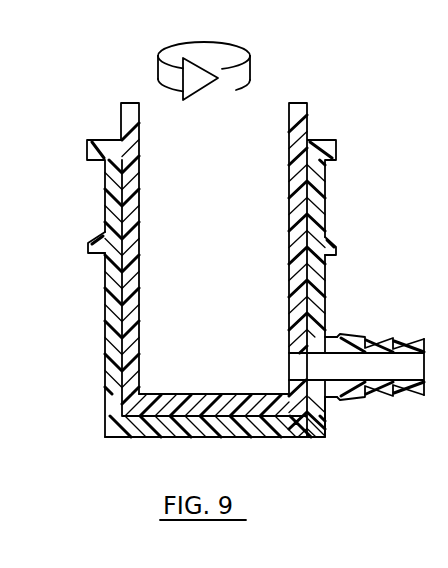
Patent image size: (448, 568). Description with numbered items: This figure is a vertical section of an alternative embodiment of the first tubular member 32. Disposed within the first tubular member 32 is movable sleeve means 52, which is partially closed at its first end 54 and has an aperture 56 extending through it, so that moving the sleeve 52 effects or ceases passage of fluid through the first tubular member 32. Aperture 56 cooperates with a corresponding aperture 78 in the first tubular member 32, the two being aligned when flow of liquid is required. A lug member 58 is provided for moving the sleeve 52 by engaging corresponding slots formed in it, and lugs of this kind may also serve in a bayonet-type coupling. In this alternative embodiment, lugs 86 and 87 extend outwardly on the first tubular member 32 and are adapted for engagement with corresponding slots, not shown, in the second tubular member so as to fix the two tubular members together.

The first tubular member 32 is at (105, 318).
The movable sleeve means 52 is at (212, 394).
The first end 54 is at (330, 444).
The aperture 56 is at (289, 363).
The lug member 58 is at (425, 397).
The corresponding aperture 78 is at (300, 358).
The lug 86 is at (89, 249).
The lug 87 is at (336, 254).